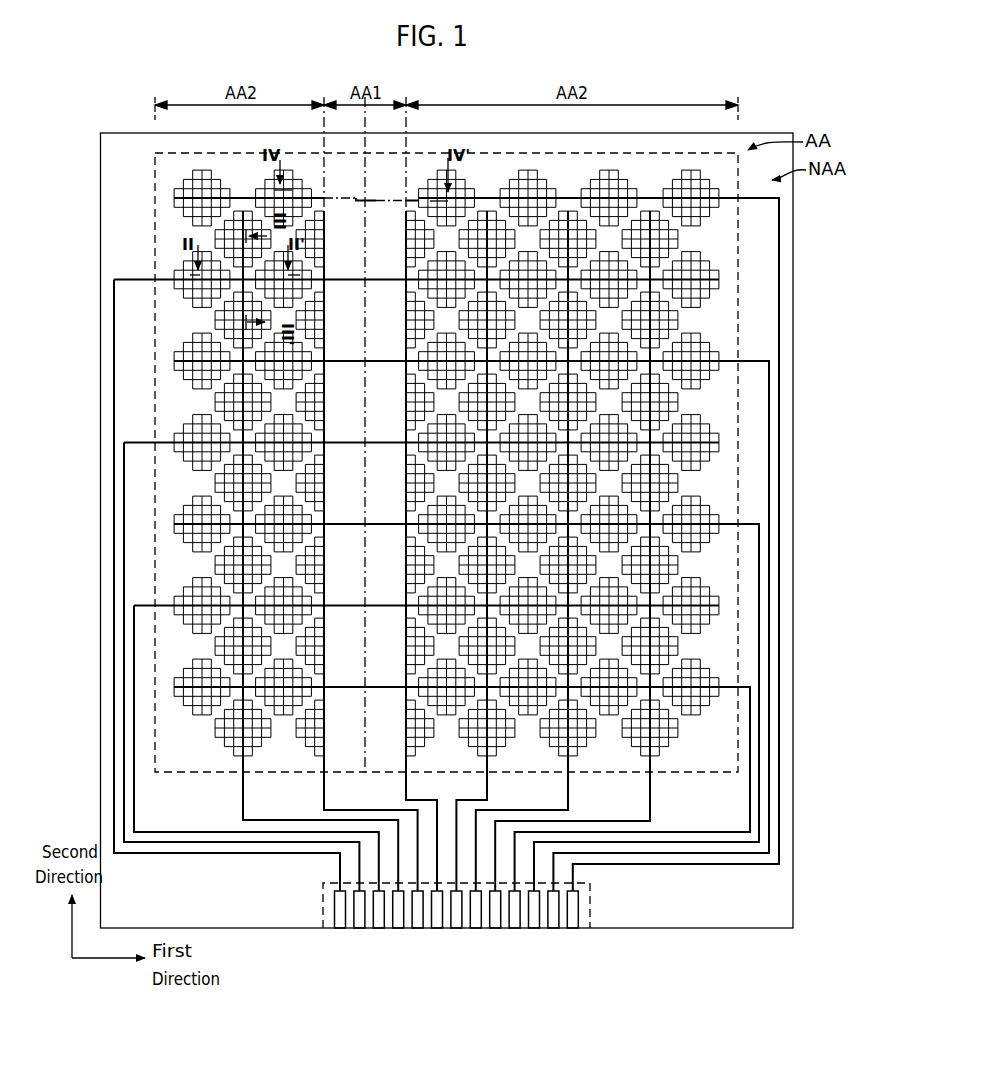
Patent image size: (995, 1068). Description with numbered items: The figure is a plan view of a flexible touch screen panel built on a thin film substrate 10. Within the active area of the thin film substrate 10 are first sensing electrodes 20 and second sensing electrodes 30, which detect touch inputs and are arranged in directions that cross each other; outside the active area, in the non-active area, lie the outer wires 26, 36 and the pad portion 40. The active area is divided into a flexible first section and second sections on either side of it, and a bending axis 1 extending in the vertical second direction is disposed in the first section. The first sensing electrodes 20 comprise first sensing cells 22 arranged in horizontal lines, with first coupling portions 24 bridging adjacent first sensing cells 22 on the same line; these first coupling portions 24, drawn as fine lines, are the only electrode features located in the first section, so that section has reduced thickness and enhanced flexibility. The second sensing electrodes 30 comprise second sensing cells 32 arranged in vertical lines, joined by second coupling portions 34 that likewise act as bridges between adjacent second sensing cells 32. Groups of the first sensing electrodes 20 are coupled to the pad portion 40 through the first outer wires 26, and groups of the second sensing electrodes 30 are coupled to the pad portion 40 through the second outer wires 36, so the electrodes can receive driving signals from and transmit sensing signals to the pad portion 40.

The bending axis 1 is at (368, 777).
The thin film substrate 10 is at (792, 748).
The first sensing electrodes 20 is at (133, 157).
The first sensing cells 22 is at (175, 196).
The first coupling portions 24 is at (243, 196).
The first outer wires 26 is at (779, 268).
The second sensing electrodes 30 is at (133, 228).
The second sensing cells 32 is at (216, 237).
The second coupling portions 34 is at (243, 279).
The second outer wires 36 is at (243, 800).
The pad portion 40 is at (322, 905).